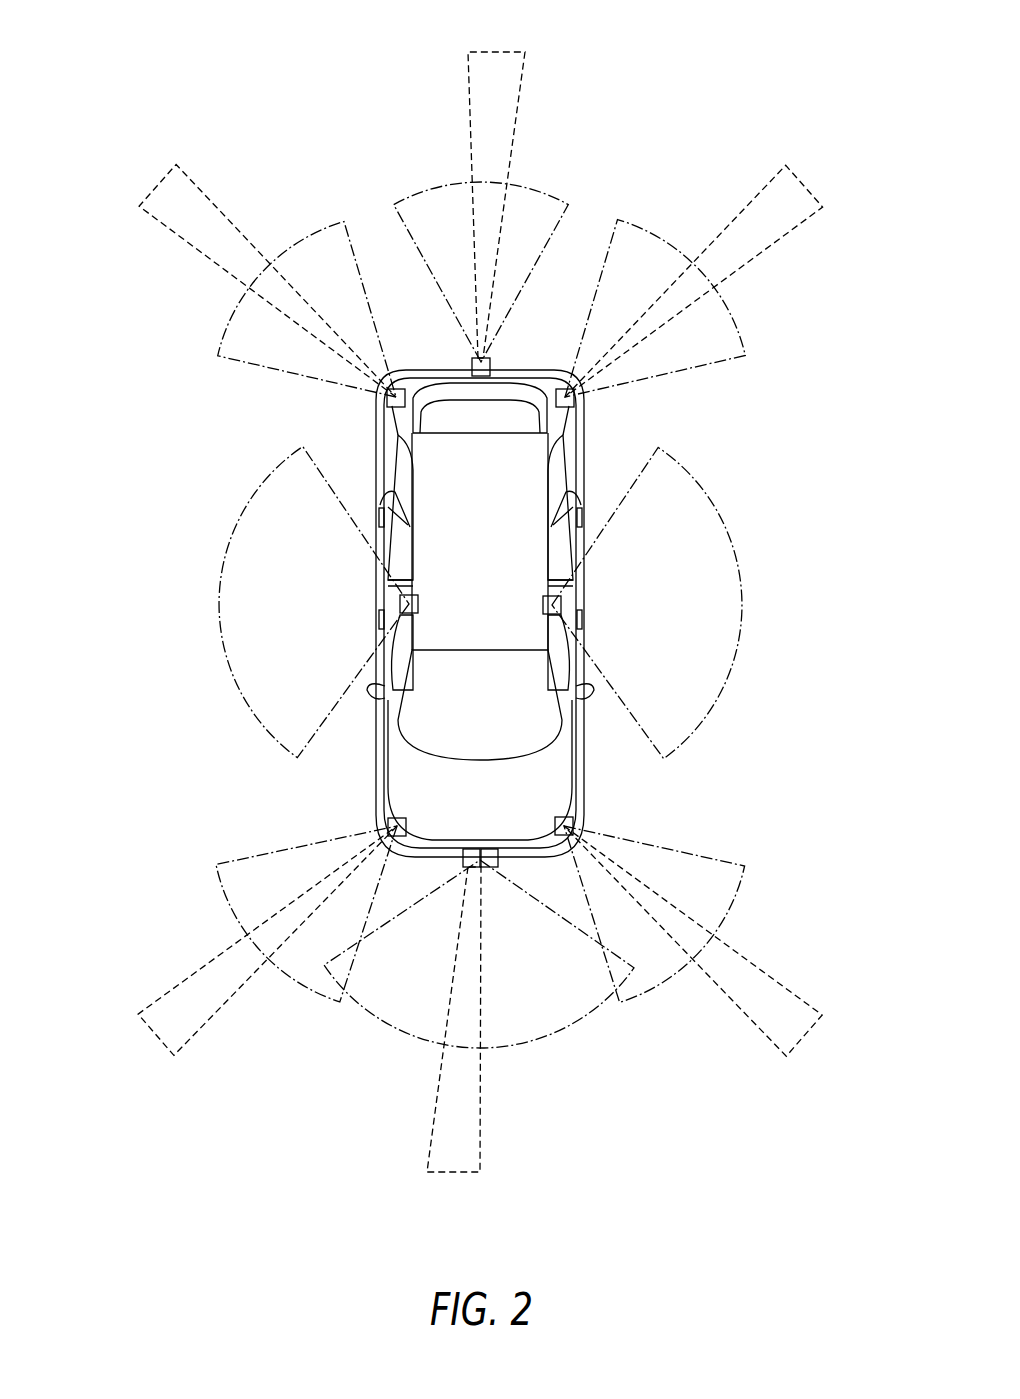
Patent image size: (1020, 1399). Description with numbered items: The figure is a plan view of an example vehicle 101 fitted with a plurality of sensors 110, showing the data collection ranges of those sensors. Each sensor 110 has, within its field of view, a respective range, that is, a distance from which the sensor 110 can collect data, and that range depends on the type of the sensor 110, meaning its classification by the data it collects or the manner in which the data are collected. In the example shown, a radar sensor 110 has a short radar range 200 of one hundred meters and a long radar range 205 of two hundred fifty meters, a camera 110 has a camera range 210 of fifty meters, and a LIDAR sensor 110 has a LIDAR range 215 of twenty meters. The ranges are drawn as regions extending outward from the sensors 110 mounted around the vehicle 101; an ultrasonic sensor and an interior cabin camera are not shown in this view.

The vehicle 101 is at (742, 70).
The sensor 110 is at (490, 363).
The short radar range 200 is at (442, 208).
The long radar range 205 is at (498, 62).
The camera range 210 is at (247, 563).
The LIDAR range 215 is at (527, 1013).